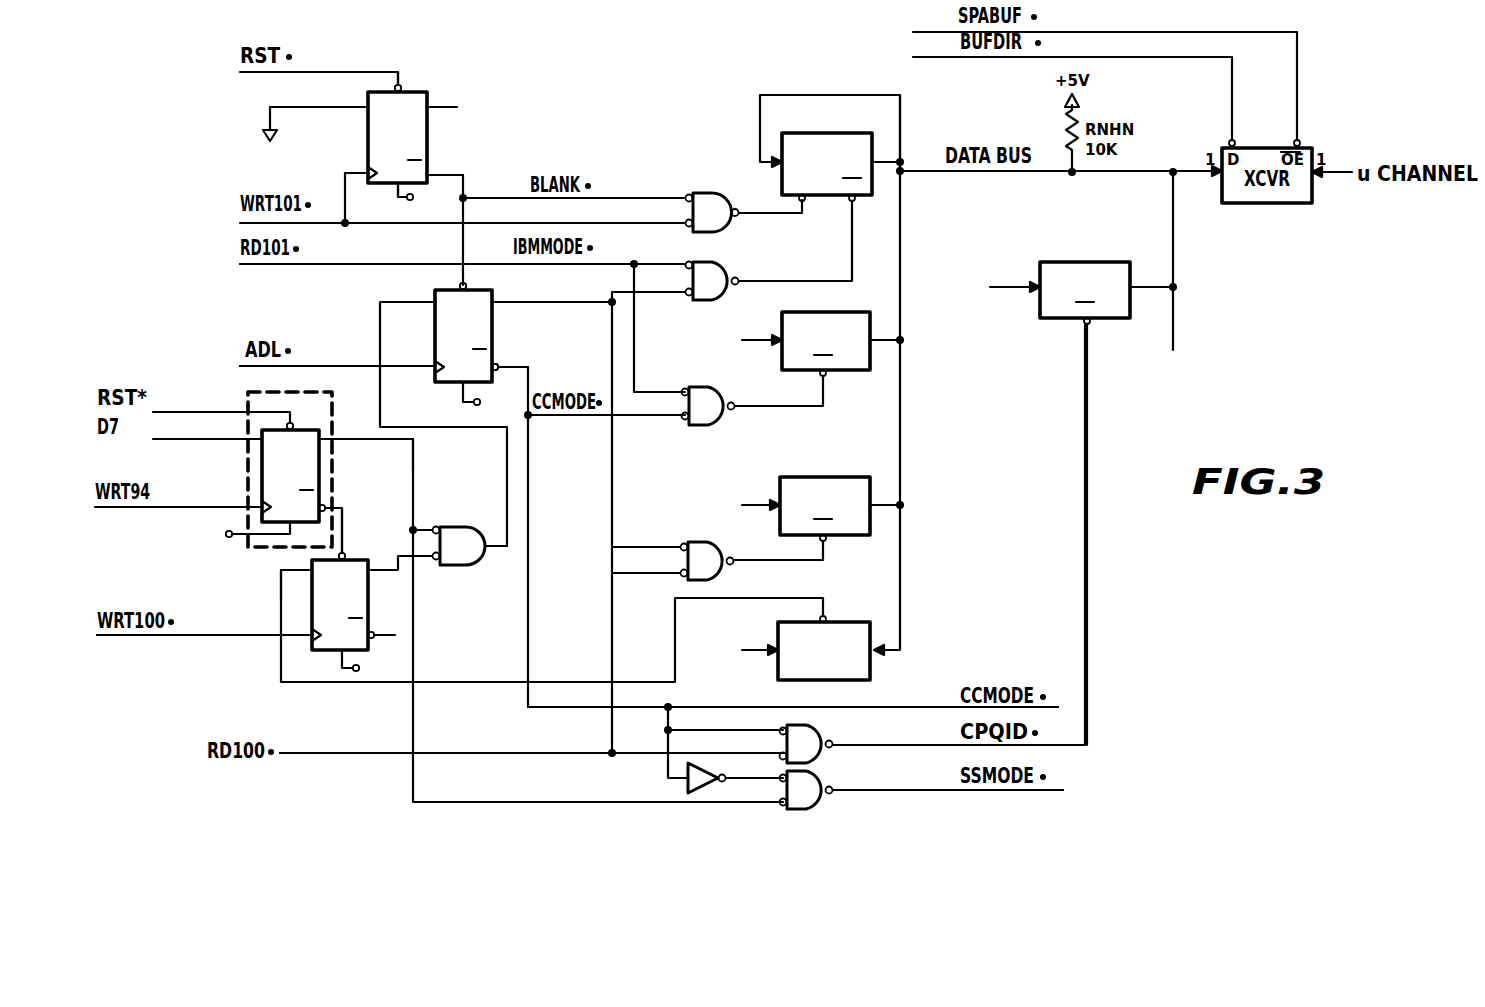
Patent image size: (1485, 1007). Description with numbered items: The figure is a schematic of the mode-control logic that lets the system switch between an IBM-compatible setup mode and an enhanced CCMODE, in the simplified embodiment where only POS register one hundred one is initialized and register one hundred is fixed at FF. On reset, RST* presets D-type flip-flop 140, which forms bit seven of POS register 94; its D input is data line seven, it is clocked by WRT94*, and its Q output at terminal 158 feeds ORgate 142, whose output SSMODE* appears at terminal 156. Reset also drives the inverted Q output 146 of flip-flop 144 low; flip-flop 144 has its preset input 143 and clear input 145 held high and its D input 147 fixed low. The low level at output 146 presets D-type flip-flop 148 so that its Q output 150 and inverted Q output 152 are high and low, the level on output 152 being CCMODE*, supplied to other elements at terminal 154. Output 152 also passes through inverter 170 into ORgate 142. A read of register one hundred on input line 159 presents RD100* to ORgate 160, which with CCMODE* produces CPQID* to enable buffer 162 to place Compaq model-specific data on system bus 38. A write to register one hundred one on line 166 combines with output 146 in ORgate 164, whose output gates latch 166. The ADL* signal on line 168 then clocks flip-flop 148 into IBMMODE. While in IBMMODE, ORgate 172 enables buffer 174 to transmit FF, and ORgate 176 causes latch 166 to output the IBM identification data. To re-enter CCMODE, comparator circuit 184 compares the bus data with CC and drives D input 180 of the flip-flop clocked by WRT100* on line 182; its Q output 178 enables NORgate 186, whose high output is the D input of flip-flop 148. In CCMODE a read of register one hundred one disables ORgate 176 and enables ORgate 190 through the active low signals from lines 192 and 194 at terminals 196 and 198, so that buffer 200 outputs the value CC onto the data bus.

The system bus 38 is at (1017, 172).
The POS register 94 is at (296, 456).
The D-type flip-flop 140 is at (326, 455).
The ORgate 142 is at (812, 809).
The preset input 143 is at (398, 85).
The flip-flop 144 is at (428, 130).
The clear input 145 is at (388, 184).
The inverted Q output 146 is at (430, 172).
The D input 147 is at (340, 107).
The D-type flip-flop 148 is at (494, 290).
The Q output 150 is at (497, 306).
The inverted Q output 152 is at (500, 362).
The terminal 154 is at (1058, 707).
The terminal 156 is at (1028, 790).
The terminal 158 is at (402, 444).
The input line 159 is at (330, 753).
The ORgate 160 is at (343, 535).
The buffer 162 is at (1117, 318).
The ORgate 164 is at (712, 192).
The latch 166 is at (830, 133).
The line 168 is at (312, 366).
The inverter 170 is at (686, 790).
The ORgate 172 is at (702, 541).
The buffer 174 is at (832, 477).
The ORgate 176 is at (732, 268).
The Q output 178 is at (386, 575).
The D input 180 is at (310, 598).
The line 182 is at (205, 637).
The comparator circuit 184 is at (836, 622).
The NORgate 186 is at (462, 524).
The ORgate 190 is at (728, 386).
The line 192 is at (345, 264).
The line 194 is at (565, 418).
The terminal 196 is at (648, 392).
The terminal 198 is at (650, 418).
The buffer 200 is at (848, 312).